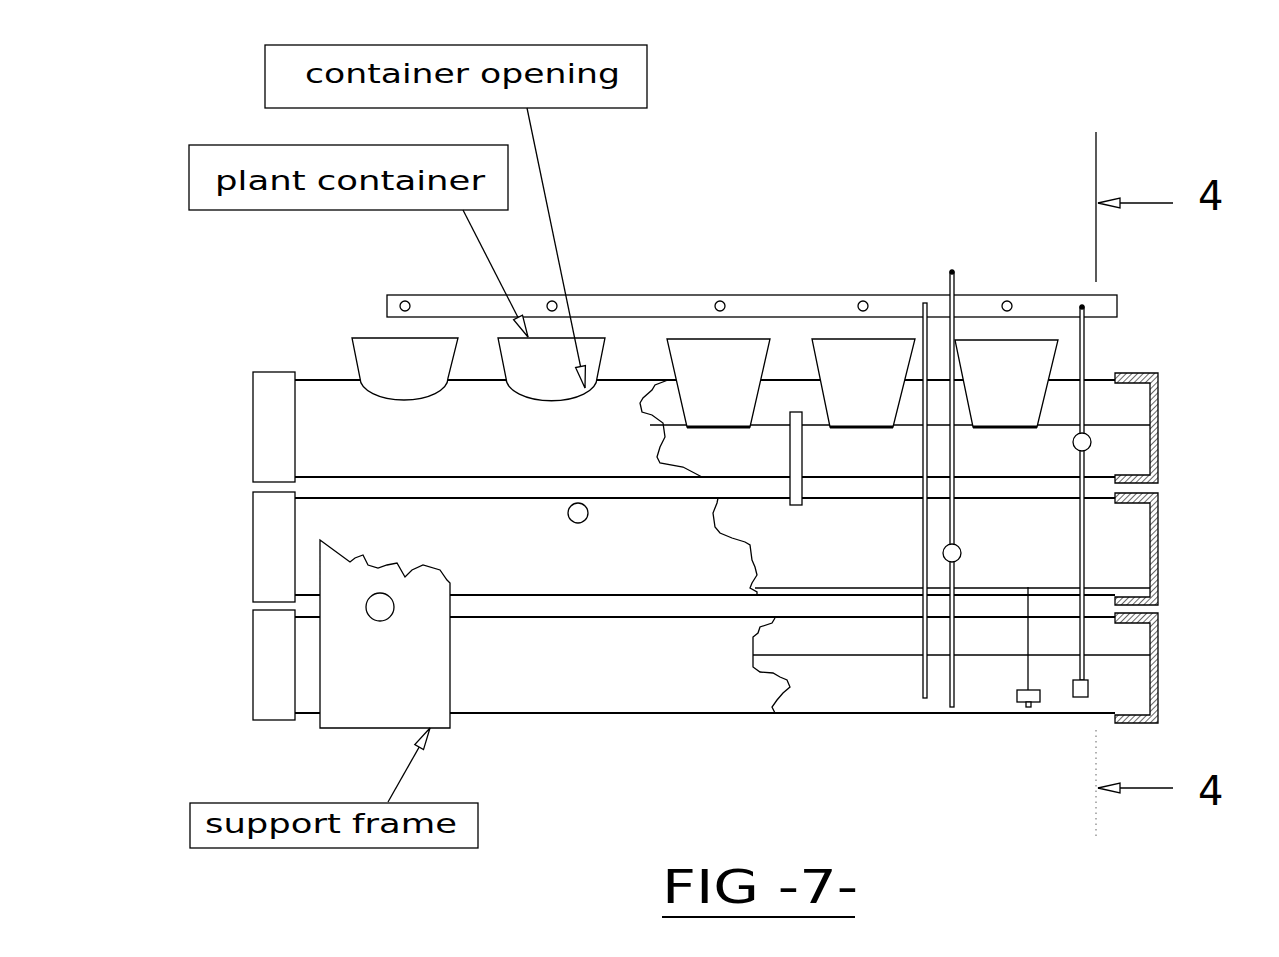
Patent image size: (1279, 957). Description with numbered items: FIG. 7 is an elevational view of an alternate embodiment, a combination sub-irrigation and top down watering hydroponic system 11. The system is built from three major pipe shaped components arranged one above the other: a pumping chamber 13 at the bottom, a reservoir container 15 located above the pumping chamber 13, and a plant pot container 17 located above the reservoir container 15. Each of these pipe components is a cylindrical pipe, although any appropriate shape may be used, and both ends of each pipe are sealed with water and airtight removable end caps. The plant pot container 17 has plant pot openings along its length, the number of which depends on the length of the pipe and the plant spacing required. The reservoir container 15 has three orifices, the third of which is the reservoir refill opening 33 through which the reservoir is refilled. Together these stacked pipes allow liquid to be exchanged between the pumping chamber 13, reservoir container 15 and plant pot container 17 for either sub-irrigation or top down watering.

The combination sub-irrigation and top down watering hydroponic system 11 is at (752, 197).
The pumping chamber 13 is at (482, 718).
The reservoir container 15 is at (542, 595).
The plant pot container 17 is at (622, 477).
The reservoir refill opening 33 is at (577, 503).